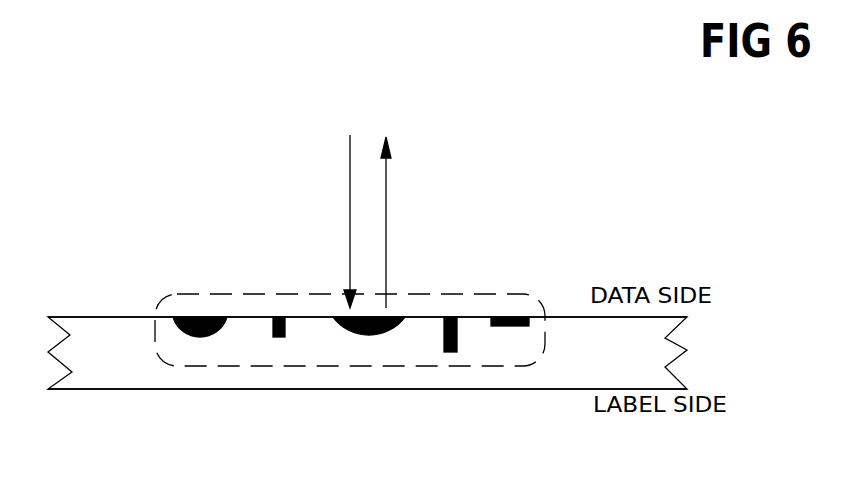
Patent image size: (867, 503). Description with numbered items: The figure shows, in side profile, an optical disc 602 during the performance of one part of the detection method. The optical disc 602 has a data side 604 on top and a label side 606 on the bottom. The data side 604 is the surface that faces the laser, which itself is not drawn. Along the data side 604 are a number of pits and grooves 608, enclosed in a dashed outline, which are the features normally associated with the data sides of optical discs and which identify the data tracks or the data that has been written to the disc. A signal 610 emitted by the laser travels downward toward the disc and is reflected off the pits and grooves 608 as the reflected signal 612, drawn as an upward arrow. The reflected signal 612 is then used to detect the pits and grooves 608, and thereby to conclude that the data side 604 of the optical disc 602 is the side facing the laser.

The optical disc 602 is at (97, 373).
The data side 604 is at (90, 317).
The label side 606 is at (192, 391).
The pits and grooves 608 is at (270, 293).
The signal 610 is at (350, 175).
The reflected signal 612 is at (386, 208).